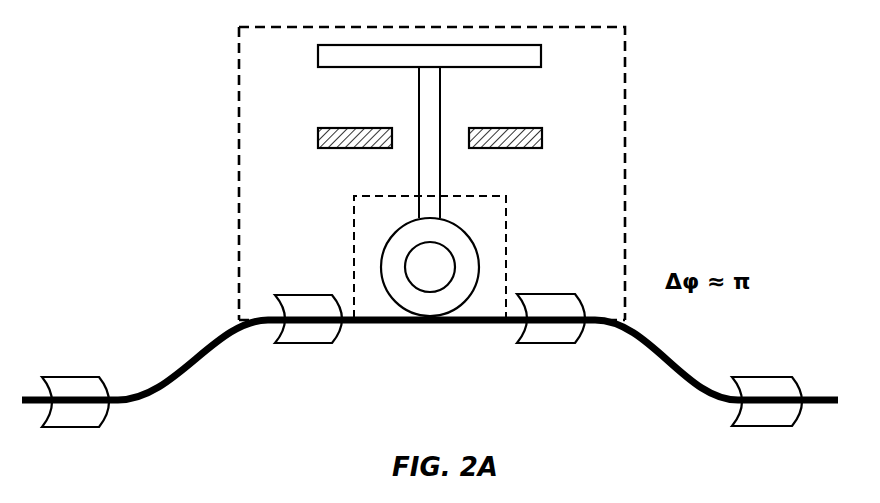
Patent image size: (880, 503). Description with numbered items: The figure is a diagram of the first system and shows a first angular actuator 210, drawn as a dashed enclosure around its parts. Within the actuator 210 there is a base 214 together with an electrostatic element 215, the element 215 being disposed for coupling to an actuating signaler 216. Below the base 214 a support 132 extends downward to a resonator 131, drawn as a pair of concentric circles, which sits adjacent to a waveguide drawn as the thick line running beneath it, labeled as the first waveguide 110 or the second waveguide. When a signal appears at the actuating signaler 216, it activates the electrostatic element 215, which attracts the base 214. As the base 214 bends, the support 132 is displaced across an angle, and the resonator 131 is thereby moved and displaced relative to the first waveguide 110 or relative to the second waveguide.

The first waveguide 110 is at (197, 376).
The resonator 131 is at (412, 235).
The support 132 is at (433, 120).
The first angular actuator 210 is at (300, 208).
The base 214 is at (540, 53).
The electrostatic element 215 is at (347, 133).
The actuating signaler 216 is at (80, 386).